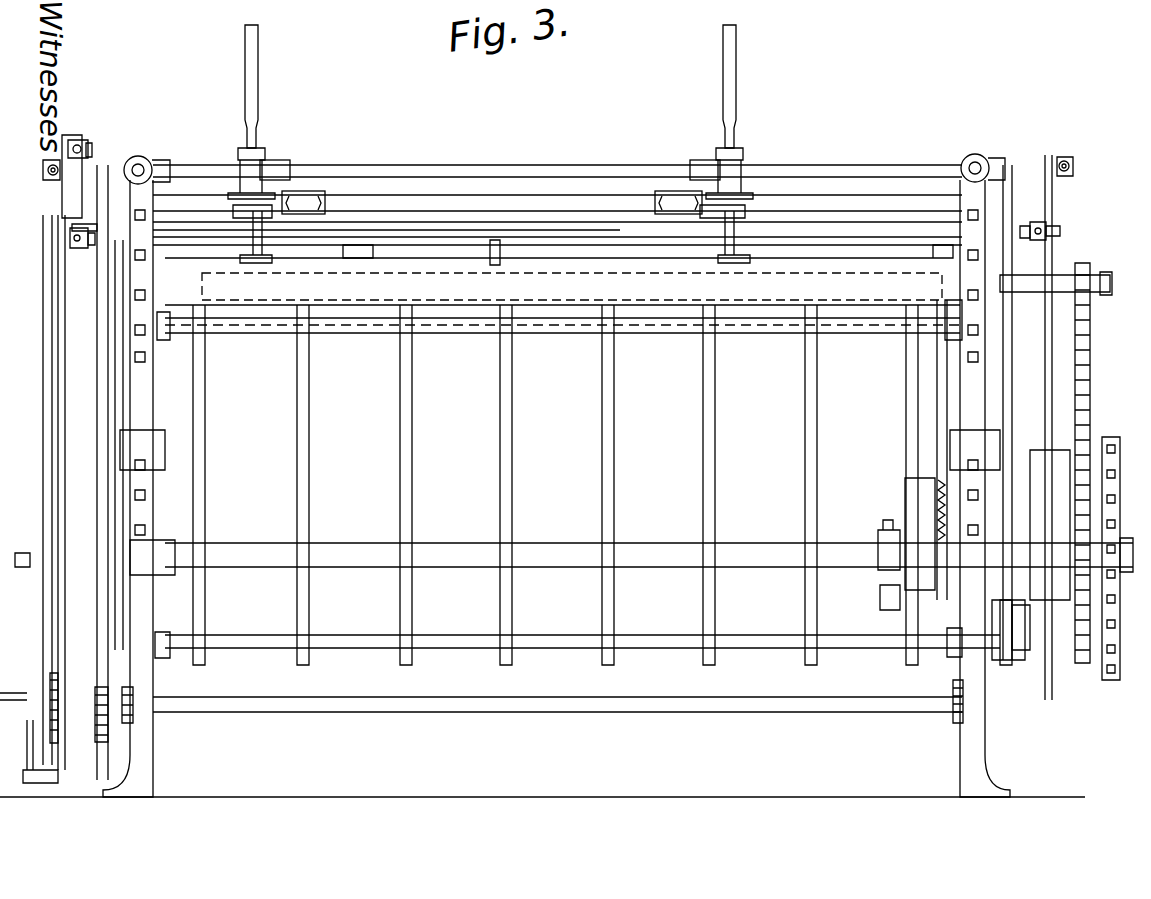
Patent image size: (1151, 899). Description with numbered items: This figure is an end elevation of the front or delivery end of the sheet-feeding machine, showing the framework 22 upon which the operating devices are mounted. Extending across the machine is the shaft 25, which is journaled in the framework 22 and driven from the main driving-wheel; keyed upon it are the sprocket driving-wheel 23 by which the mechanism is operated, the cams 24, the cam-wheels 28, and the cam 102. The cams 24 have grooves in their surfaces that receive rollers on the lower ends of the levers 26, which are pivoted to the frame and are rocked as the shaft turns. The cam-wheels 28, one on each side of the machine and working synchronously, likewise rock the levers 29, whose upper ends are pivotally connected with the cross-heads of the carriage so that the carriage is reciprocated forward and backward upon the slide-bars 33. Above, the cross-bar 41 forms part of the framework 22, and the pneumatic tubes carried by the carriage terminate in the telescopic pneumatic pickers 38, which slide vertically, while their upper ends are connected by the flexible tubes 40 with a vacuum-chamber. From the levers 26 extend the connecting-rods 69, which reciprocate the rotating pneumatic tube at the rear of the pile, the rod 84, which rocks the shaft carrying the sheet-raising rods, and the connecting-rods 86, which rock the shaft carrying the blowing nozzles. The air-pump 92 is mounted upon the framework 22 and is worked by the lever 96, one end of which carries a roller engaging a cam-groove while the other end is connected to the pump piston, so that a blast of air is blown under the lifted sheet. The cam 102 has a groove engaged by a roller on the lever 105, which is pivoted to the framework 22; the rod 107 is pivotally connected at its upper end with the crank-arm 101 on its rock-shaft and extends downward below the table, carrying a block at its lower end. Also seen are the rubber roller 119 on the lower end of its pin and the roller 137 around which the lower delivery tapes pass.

The framework 22 is at (145, 395).
The sprocket driving-wheel 23 is at (1112, 435).
The cams 24 is at (60, 515).
The shaft 25 is at (345, 560).
The levers 26 is at (65, 338).
The cam-wheels 28 is at (148, 598).
The levers 29 is at (100, 290).
The bars 33 is at (140, 156).
The telescopic pneumatic pickers 38 is at (252, 227).
The flexible tubes 40 is at (502, 144).
The cross-bar 41 is at (405, 178).
The connecting-rods 69 is at (75, 240).
The rod 84 is at (78, 145).
The connecting-rods 86 is at (50, 176).
The air-pump 92 is at (1060, 478).
The lever 96 is at (1023, 650).
The crank-arm 101 is at (945, 260).
The cam 102 is at (905, 596).
The lever 105 is at (920, 478).
The rod 107 is at (940, 378).
The roller 119 is at (370, 258).
The roller 137 is at (572, 285).